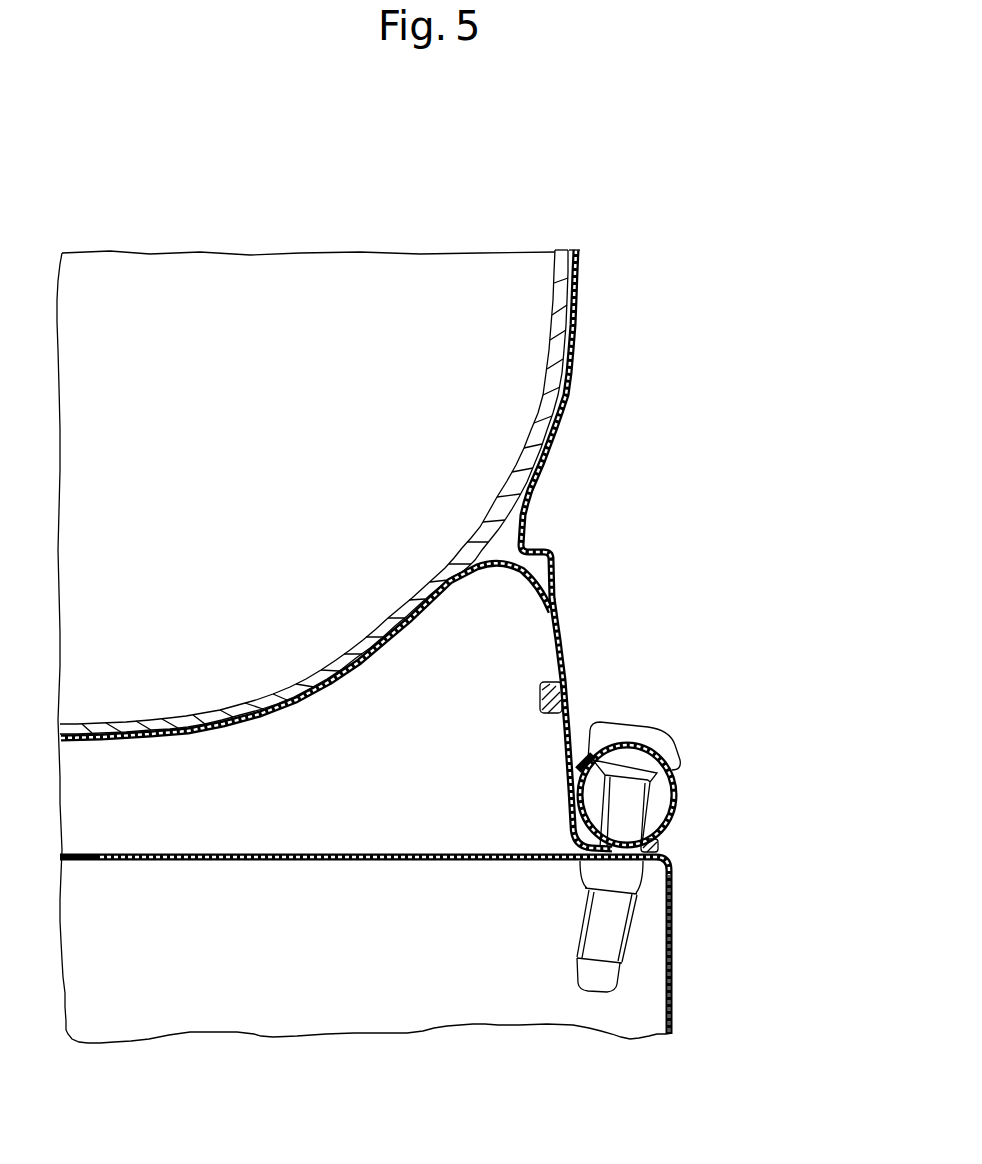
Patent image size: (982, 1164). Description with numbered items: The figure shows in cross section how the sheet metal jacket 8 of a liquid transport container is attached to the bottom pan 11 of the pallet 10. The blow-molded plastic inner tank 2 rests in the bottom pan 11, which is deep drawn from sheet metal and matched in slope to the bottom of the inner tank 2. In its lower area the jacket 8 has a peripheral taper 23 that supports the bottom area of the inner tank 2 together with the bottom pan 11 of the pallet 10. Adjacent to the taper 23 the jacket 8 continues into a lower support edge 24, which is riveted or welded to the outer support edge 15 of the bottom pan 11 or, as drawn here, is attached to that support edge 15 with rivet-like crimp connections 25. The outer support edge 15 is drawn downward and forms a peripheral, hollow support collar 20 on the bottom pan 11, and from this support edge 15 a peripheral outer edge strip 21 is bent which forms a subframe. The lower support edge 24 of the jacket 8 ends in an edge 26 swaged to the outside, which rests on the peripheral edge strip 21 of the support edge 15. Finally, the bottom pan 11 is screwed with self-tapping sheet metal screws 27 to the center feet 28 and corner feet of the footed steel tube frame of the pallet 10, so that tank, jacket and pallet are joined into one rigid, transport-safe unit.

The plastic inner tank 2 is at (370, 285).
The jacket 8 is at (582, 262).
The peripheral taper 23 is at (561, 409).
The hollow support collar 20 is at (482, 637).
The lower support edge 24 is at (560, 630).
The rivet-like crimp connections 25 is at (560, 702).
The swaged edge 26 is at (673, 797).
The self-tapping sheet metal screws 27 is at (662, 742).
The peripheral outer edge strip 21 is at (660, 847).
The center feet 28 is at (468, 945).
The pallet 10 is at (374, 1042).
The bottom pan 11 is at (268, 722).
The outer support edge 15 is at (543, 660).